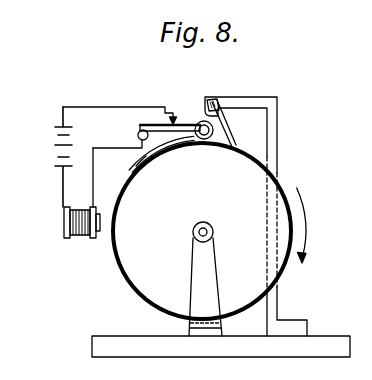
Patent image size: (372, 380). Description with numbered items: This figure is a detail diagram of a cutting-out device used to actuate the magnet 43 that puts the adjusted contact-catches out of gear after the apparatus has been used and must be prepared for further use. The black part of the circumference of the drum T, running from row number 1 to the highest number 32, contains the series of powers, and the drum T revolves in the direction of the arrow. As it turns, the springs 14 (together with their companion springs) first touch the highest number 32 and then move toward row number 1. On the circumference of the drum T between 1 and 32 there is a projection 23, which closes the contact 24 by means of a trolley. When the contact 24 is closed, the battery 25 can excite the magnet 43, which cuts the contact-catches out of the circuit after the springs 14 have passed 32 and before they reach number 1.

The row number 1 is at (212, 142).
The spring 14 is at (228, 124).
The projection 23 is at (173, 144).
The contact 24 is at (180, 122).
The battery 25 is at (58, 141).
The highest number 32 is at (147, 163).
The magnet 43 is at (77, 234).
The drum T is at (202, 231).